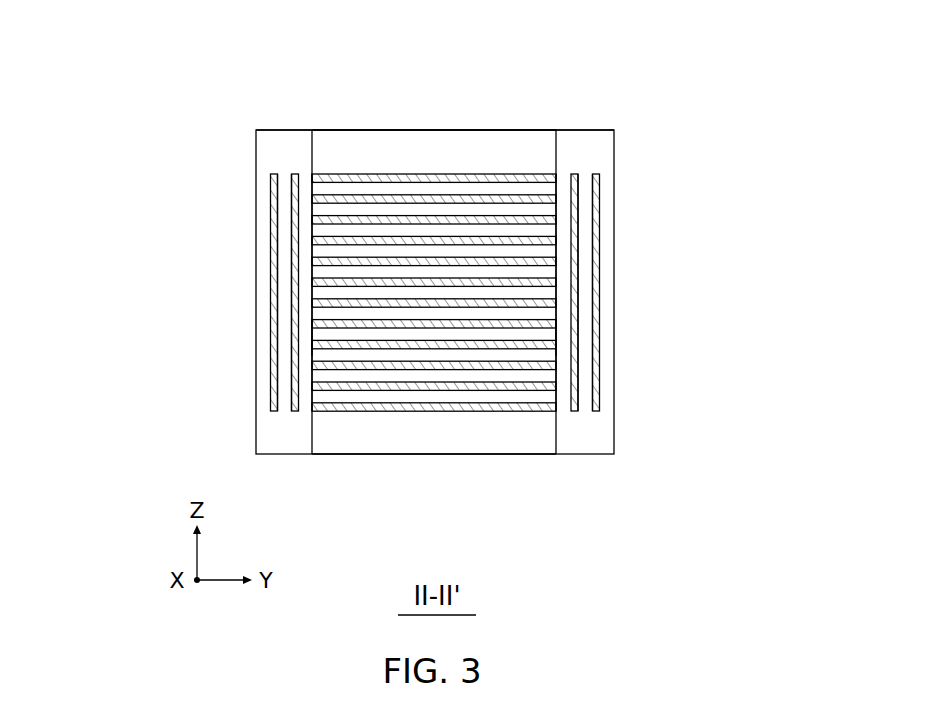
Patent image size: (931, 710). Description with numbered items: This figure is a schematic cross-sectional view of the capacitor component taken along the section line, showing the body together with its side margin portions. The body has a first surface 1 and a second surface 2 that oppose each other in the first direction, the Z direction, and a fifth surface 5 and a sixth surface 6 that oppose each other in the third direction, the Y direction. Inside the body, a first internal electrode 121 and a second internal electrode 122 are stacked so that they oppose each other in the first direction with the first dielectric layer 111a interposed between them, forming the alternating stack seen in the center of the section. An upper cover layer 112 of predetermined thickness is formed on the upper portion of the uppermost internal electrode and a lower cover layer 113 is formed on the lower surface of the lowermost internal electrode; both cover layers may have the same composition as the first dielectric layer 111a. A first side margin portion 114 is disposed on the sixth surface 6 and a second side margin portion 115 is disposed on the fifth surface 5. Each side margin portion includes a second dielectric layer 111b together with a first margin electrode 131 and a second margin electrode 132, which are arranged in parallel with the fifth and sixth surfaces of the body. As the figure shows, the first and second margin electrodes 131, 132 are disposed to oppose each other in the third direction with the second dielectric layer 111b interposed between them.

The first surface 1 is at (487, 460).
The second surface 2 is at (474, 126).
The fifth surface 5 is at (562, 341).
The sixth surface 6 is at (306, 341).
The first dielectric layer 111a is at (452, 190).
The second dielectric layer 111b is at (283, 300).
The upper cover layer 112 is at (372, 152).
The lower cover layer 113 is at (440, 437).
The first side margin portion 114 is at (291, 152).
The second side margin portion 115 is at (590, 152).
The first internal electrode 121 is at (518, 176).
The second internal electrode 122 is at (537, 198).
The first margin electrode 131 is at (292, 209).
The second margin electrode 132 is at (276, 252).